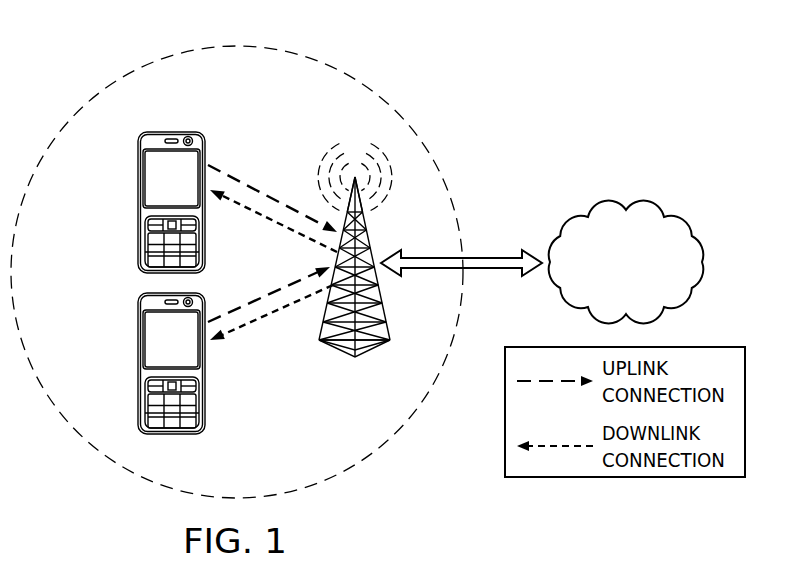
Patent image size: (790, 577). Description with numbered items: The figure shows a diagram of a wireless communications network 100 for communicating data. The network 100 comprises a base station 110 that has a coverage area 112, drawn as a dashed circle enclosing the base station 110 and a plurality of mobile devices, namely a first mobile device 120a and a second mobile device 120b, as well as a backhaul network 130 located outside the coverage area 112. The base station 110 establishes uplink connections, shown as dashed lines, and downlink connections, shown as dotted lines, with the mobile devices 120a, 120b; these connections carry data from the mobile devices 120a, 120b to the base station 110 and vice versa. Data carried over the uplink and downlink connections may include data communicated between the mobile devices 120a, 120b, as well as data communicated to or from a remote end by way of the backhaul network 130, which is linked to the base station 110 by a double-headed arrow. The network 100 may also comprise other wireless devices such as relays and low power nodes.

The network 100 is at (553, 86).
The base station 110 is at (361, 349).
The coverage area 112 is at (126, 68).
The mobile device 120a is at (138, 202).
The mobile device 120b is at (138, 363).
The backhaul network 130 is at (627, 194).